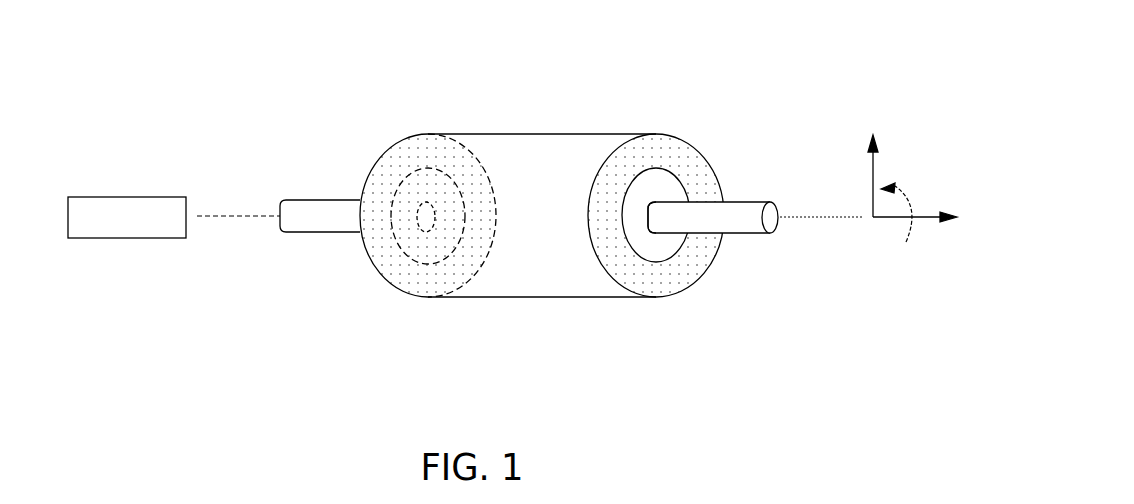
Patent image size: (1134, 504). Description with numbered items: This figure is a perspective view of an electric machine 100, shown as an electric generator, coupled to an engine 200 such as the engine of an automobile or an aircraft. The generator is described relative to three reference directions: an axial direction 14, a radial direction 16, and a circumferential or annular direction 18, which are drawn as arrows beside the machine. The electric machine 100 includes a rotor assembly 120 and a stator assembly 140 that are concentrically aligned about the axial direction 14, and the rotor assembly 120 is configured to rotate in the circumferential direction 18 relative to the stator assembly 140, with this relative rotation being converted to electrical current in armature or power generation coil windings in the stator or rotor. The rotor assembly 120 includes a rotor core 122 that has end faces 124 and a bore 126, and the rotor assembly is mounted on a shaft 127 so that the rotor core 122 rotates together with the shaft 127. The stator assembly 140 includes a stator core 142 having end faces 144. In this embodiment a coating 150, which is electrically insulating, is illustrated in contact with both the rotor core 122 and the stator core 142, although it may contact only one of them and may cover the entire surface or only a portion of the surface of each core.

The electric machine 100 is at (543, 196).
The axial direction 14 is at (241, 215).
The radial direction 16 is at (878, 138).
The circumferential direction 18 is at (907, 178).
The rotor assembly 120 is at (670, 262).
The rotor core 122 is at (400, 188).
The end faces 124 is at (410, 243).
The bore 126 is at (415, 218).
The shaft 127 is at (750, 222).
The stator assembly 140 is at (708, 159).
The stator core 142 is at (696, 138).
The end faces 144 is at (632, 157).
The coating 150 is at (632, 226).
The engine 200 is at (128, 196).